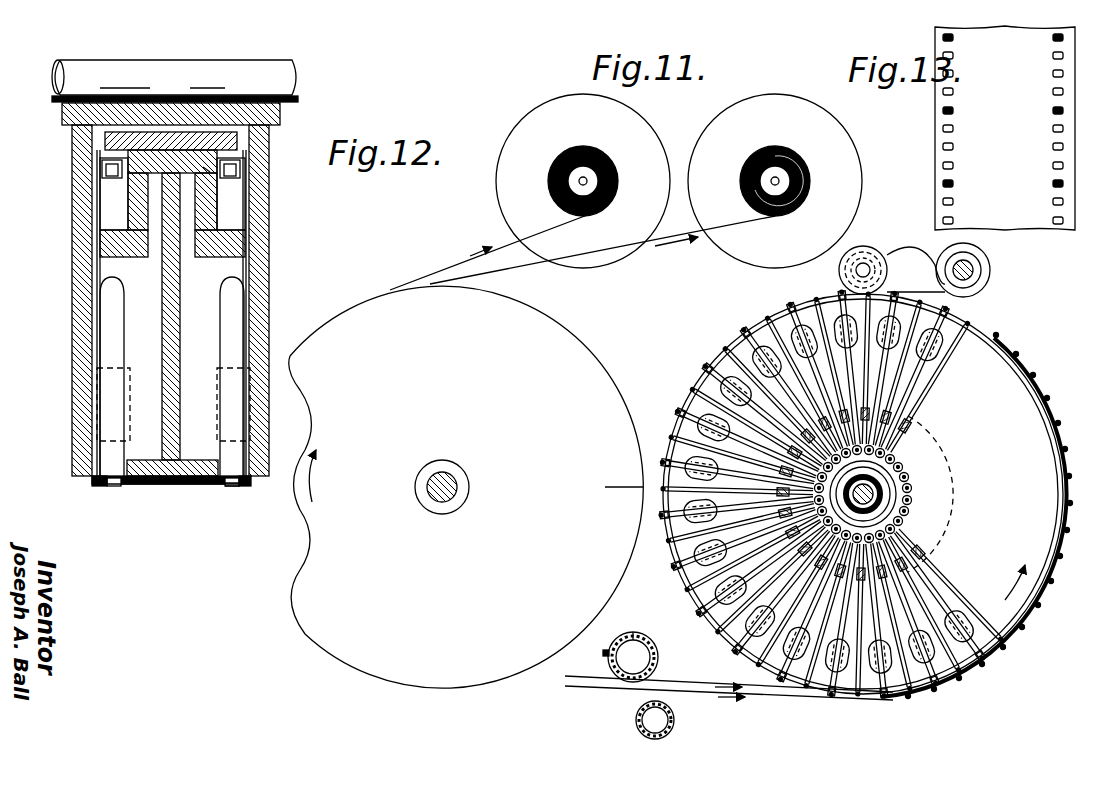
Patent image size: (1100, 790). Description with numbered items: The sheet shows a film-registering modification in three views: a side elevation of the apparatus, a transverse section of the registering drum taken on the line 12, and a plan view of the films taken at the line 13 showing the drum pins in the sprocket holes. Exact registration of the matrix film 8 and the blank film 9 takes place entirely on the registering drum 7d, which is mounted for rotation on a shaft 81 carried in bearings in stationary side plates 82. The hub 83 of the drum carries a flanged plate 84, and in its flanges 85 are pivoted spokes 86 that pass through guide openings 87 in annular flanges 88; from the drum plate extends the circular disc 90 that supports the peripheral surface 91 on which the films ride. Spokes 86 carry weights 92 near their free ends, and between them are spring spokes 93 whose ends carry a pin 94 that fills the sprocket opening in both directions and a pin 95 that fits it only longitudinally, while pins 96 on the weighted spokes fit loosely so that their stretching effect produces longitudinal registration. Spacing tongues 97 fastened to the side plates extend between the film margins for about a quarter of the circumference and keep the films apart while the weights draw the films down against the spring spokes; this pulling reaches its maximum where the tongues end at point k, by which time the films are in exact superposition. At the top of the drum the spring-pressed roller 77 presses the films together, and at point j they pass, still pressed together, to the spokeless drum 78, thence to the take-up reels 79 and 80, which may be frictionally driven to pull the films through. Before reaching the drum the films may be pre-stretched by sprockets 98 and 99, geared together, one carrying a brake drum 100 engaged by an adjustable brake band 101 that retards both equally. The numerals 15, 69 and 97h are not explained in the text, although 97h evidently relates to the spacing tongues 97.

In FIG. 11, the registering drum 7d is at (1003, 614).
In FIG. 12, the matrix film 8 is at (217, 483).
In FIG. 11, the matrix film 8 is at (705, 692).
In FIG. 12, the blank film 9 is at (200, 483).
In FIG. 11, the blank film 9 is at (705, 700).
In FIG. 13, the blank film 9 is at (1020, 210).
In FIG. 11, the section line 12 is at (890, 492).
In FIG. 11, the section line 13 is at (1010, 340).
In FIG. 11, the rim tooth 15 is at (1064, 430).
In FIG. 12, the port 69 is at (203, 167).
In FIG. 11, the spring-pressed roller 77 is at (866, 262).
In FIG. 11, the spokeless drum 78 is at (588, 372).
In FIG. 11, the take-up reel 79 is at (535, 136).
In FIG. 11, the take-up reel 80 is at (757, 107).
In FIG. 12, the shaft 81 is at (155, 74).
In FIG. 12, the side plates 82 is at (260, 267).
In FIG. 12, the hub 83 is at (218, 118).
In FIG. 12, the flanged plate 84 is at (223, 138).
In FIG. 12, the flanges 85 is at (100, 163).
In FIG. 12, the spokes 86 is at (233, 210).
In FIG. 11, the spokes 86 is at (718, 628).
In FIG. 11, the guide openings 87 is at (700, 625).
In FIG. 12, the annular flanges 88 is at (215, 238).
In FIG. 11, the annular flanges 88 is at (905, 546).
In FIG. 12, the circular disc 90 is at (172, 350).
In FIG. 12, the peripheral surface 91 is at (143, 483).
In FIG. 12, the weights 92 is at (128, 402).
In FIG. 11, the weights 92 is at (790, 648).
In FIG. 12, the spring spokes 93 is at (115, 335).
In FIG. 11, the spring spokes 93 is at (690, 615).
In FIG. 12, the pin 94 is at (238, 488).
In FIG. 13, the pin 94 is at (1063, 37).
In FIG. 12, the pin 95 is at (113, 487).
In FIG. 13, the pin 95 is at (943, 37).
In FIG. 11, the pins 96 is at (790, 692).
In FIG. 13, the pins 96 is at (945, 110).
In FIG. 12, the spacing tongues 97 is at (85, 483).
In FIG. 11, the piston rod 97h is at (855, 692).
In FIG. 11, the sprocket 98 is at (616, 647).
In FIG. 11, the sprocket 99 is at (637, 728).
In FIG. 11, the brake drum 100 is at (642, 640).
In FIG. 11, the brake band 101 is at (606, 660).
In FIG. 11, the point j is at (612, 497).
In FIG. 11, the point k is at (1068, 480).